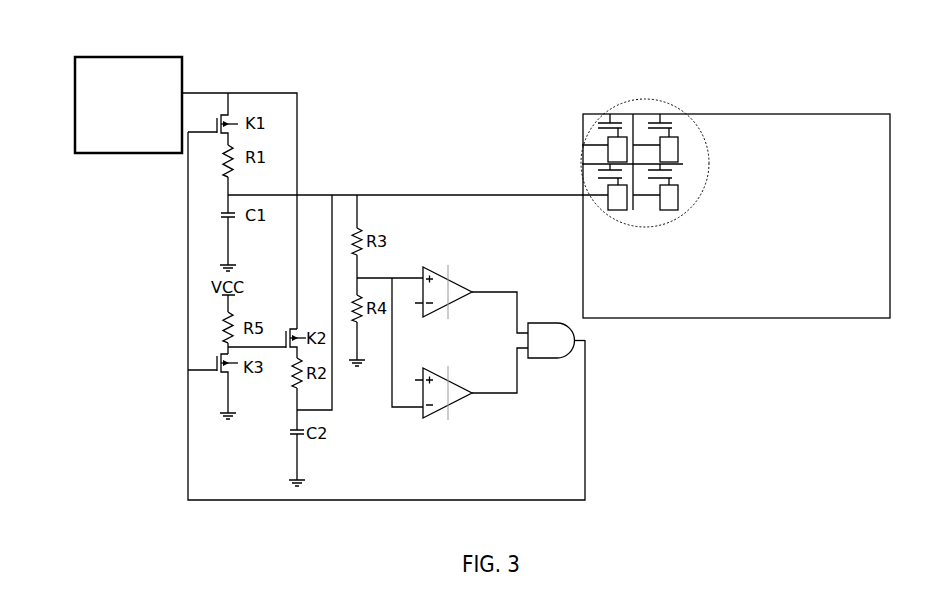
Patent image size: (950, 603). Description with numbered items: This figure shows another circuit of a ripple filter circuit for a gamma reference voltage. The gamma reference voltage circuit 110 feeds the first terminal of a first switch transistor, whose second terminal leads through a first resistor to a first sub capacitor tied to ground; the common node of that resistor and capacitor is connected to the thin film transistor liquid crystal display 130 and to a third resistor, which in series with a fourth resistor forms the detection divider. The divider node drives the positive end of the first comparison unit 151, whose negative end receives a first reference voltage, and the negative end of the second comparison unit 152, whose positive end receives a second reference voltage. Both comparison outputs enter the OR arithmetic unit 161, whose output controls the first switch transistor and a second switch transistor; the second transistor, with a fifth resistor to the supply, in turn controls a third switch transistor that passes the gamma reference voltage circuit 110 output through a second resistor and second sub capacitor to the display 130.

The gamma reference voltage circuit 110 is at (135, 58).
The thin film transistor liquid crystal display 130 is at (767, 113).
The first comparison unit 151 is at (452, 282).
The second comparison unit 152 is at (452, 384).
The OR arithmetic unit 161 is at (576, 348).